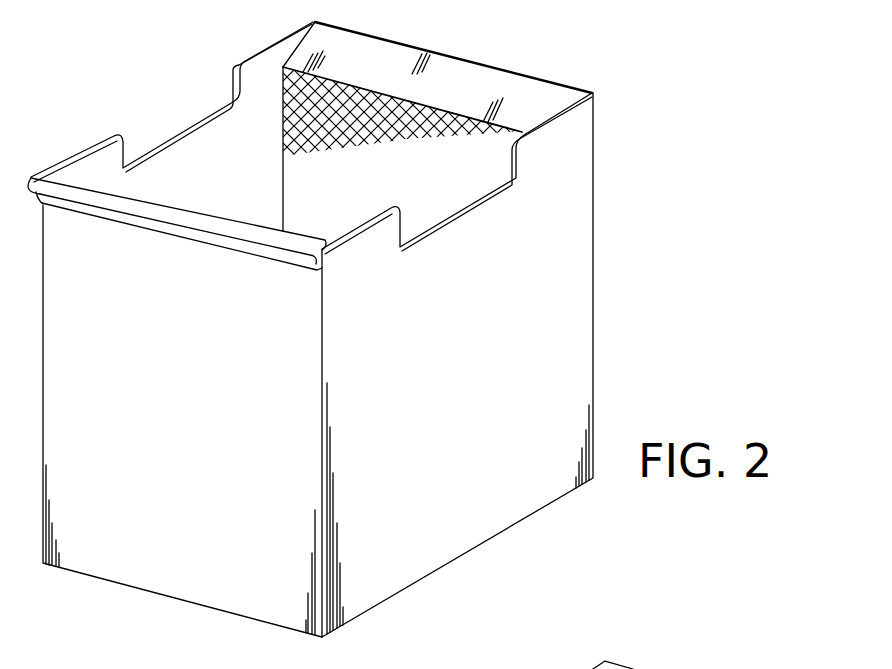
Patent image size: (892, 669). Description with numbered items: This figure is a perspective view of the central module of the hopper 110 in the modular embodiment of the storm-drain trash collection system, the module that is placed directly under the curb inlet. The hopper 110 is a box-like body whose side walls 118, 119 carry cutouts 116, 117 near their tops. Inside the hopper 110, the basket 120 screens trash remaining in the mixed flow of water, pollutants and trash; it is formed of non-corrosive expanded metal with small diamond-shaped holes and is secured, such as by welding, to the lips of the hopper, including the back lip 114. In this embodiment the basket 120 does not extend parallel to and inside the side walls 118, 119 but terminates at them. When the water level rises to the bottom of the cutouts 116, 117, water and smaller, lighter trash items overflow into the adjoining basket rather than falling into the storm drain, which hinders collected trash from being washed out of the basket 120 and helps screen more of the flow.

The hopper 110 is at (607, 214).
The back lip 114 is at (481, 95).
The cutout 116 is at (185, 129).
The cutout 117 is at (492, 183).
The side wall 118 is at (264, 201).
The side wall 119 is at (516, 369).
The basket 120 is at (283, 126).